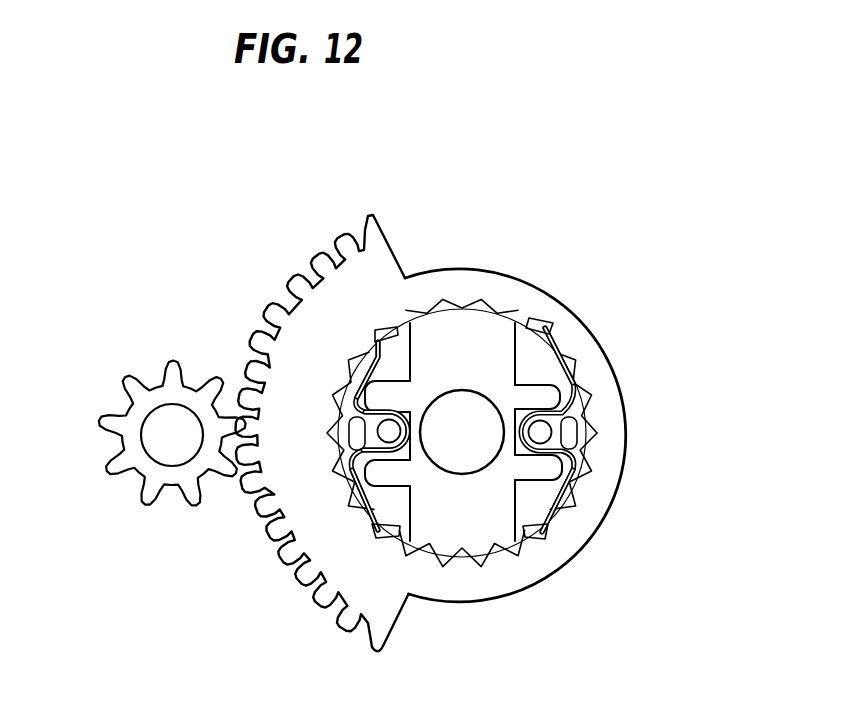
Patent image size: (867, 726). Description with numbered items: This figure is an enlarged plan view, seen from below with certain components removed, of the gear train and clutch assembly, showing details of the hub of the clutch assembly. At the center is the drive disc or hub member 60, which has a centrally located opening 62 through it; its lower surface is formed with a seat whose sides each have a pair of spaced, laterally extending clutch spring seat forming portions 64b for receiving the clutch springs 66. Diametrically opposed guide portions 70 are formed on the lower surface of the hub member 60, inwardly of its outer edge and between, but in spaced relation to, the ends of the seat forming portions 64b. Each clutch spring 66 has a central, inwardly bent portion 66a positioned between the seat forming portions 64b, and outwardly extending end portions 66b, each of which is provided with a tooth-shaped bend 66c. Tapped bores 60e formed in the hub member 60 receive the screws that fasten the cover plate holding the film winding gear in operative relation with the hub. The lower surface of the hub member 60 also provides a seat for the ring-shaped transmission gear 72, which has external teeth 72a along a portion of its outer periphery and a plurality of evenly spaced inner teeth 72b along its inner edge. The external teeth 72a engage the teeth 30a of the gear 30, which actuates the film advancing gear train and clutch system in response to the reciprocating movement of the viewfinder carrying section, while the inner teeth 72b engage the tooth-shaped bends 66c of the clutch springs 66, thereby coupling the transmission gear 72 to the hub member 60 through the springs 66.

The gear 30 is at (153, 497).
The teeth of gear 30a is at (107, 425).
The drive disc or hub member 60 is at (493, 330).
The tapped bores 60e is at (583, 467).
The centrally located opening 62 is at (468, 392).
The clutch spring seat forming portions 64b is at (550, 472).
The clutch springs 66 is at (565, 366).
The central inwardly bent portion 66a is at (410, 458).
The outwardly extending end portions 66b is at (545, 500).
The tooth-shaped bend 66c is at (545, 535).
The guide portions 70 is at (585, 466).
The ring-shaped transmission gear 72 is at (497, 602).
The external teeth 72a is at (375, 653).
The inner teeth 72b is at (478, 550).